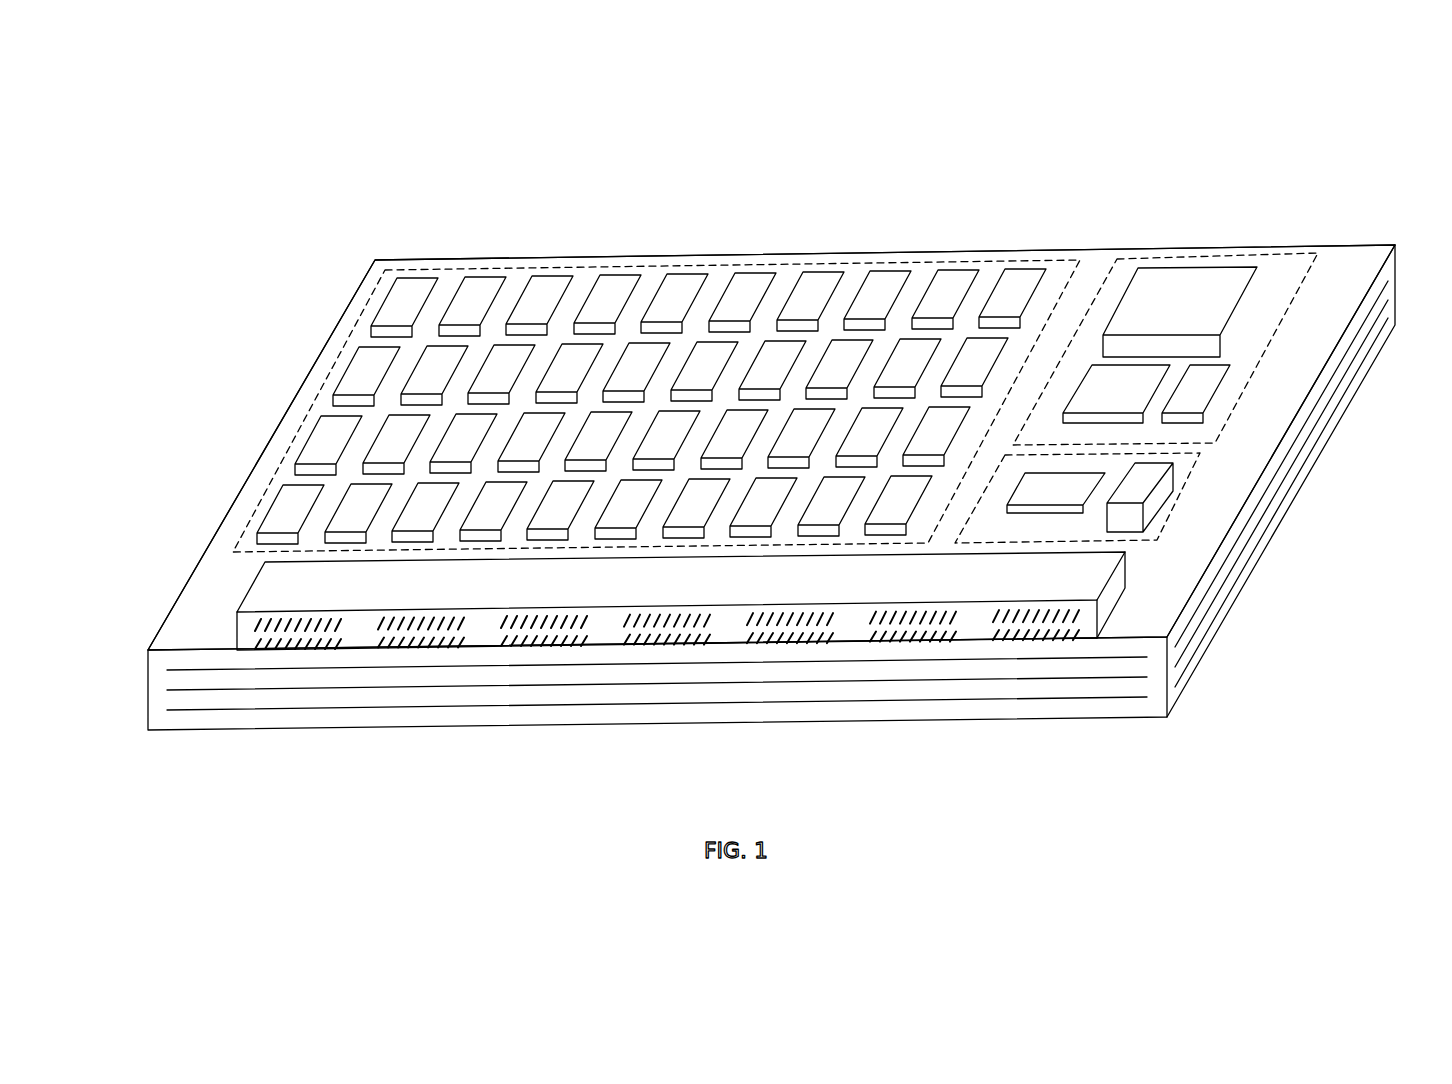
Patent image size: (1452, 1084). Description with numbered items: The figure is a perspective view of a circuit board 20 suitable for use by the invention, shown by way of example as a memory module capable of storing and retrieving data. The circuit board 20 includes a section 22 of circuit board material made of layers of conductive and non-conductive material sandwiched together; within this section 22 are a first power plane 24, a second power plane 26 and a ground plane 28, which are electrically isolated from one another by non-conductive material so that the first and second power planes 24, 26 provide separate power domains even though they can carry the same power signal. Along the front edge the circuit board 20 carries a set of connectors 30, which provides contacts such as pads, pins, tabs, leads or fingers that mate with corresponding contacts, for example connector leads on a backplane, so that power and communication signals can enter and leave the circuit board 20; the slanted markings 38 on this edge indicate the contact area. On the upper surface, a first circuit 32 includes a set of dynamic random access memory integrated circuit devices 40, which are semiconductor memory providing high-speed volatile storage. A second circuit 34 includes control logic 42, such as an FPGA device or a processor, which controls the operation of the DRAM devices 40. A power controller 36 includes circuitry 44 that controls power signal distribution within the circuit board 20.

The circuit board 20 is at (1355, 178).
The section of circuit board material 22 is at (185, 620).
The first power plane 24 is at (178, 672).
The second power plane 26 is at (245, 690).
The ground plane 28 is at (313, 710).
The set of connectors 30 is at (1127, 560).
The first circuit 32 is at (656, 370).
The second circuit 34 is at (1170, 313).
The power controller 36 is at (1134, 522).
The vent openings 38 is at (728, 618).
The DRAM integrated circuit devices 40 is at (865, 283).
The control logic 42 is at (1200, 278).
The circuitry 44 is at (1155, 516).